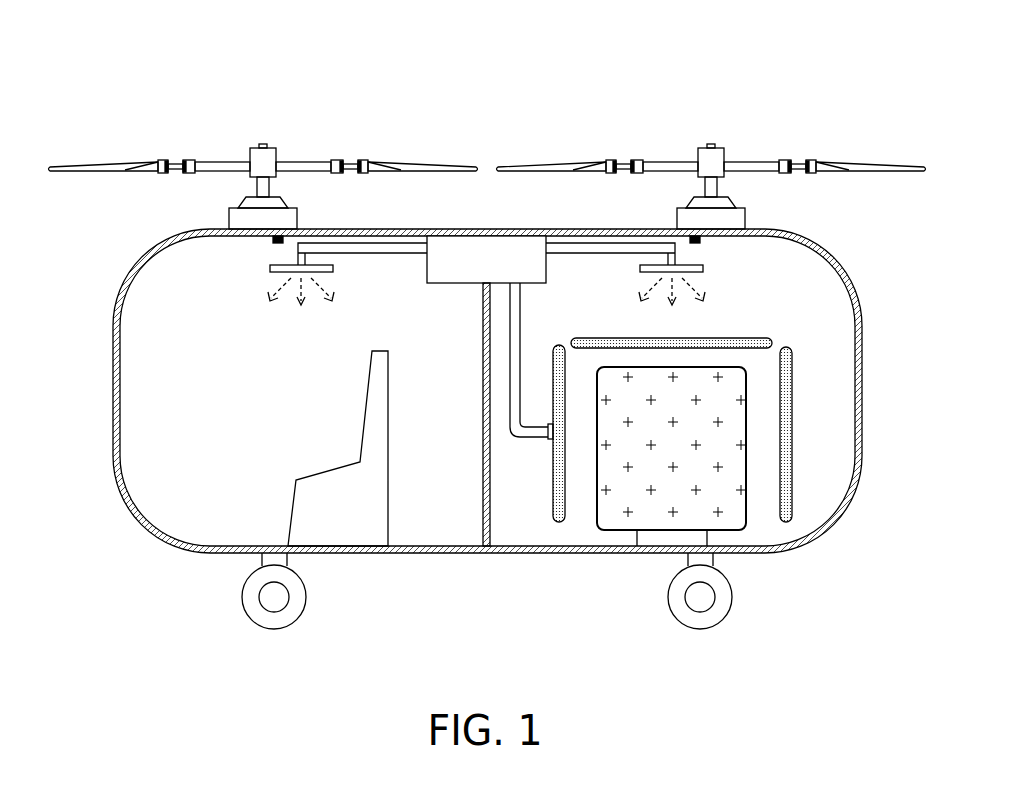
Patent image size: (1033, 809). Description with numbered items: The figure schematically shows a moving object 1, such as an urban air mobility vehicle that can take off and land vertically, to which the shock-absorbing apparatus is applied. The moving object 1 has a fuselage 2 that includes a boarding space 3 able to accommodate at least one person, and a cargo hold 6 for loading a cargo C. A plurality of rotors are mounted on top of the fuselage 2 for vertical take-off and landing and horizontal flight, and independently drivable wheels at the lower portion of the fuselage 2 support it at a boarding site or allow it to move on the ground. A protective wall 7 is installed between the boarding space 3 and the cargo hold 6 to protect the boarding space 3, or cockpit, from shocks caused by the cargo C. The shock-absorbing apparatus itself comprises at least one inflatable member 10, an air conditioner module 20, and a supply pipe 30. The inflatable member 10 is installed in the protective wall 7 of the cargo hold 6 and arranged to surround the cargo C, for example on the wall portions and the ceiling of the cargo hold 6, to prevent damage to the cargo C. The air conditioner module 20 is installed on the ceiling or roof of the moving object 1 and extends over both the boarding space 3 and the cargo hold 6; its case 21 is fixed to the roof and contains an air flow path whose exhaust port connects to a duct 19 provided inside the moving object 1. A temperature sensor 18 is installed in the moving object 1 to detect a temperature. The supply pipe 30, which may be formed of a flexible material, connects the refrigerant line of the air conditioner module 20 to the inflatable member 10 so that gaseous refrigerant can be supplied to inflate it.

The moving object 1 is at (486, 112).
The fuselage 2 is at (114, 403).
The boarding space 3 is at (177, 318).
The cargo hold 6 is at (797, 318).
The protective wall 7 is at (483, 525).
The inflatable member 10 is at (790, 417).
The temperature sensor 18 is at (690, 240).
The duct 19 is at (360, 248).
The air conditioner module 20 is at (490, 246).
The case 21 is at (540, 265).
The supply pipe 30 is at (540, 445).
The cargo C is at (617, 510).